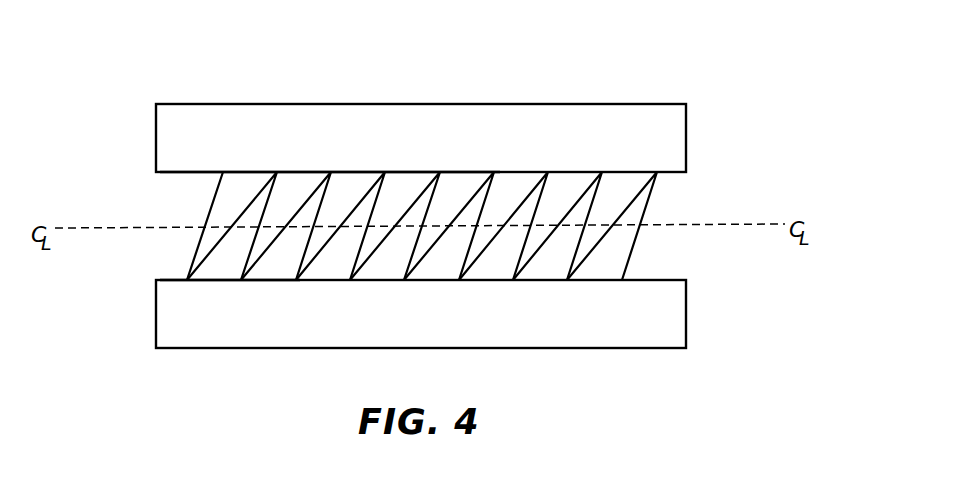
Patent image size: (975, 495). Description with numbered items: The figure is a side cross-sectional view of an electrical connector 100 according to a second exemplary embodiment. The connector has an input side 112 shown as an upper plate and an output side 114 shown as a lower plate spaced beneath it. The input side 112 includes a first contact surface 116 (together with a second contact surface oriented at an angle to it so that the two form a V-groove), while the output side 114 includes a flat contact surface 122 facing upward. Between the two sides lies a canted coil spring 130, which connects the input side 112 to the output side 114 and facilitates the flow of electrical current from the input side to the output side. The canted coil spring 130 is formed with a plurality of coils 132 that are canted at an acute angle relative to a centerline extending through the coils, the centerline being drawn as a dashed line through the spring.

The electrical connector 100 is at (688, 62).
The input side 112 is at (211, 128).
The output side 114 is at (665, 316).
The first contact surface 116 is at (173, 173).
The flat contact surface 122 is at (185, 281).
The canted coil spring 130 is at (651, 192).
The coils 132 is at (307, 198).